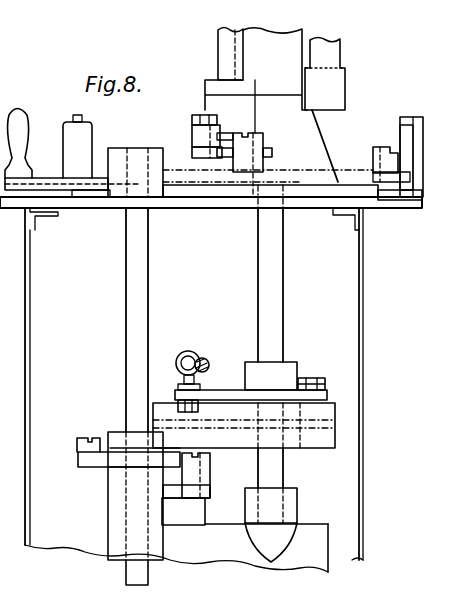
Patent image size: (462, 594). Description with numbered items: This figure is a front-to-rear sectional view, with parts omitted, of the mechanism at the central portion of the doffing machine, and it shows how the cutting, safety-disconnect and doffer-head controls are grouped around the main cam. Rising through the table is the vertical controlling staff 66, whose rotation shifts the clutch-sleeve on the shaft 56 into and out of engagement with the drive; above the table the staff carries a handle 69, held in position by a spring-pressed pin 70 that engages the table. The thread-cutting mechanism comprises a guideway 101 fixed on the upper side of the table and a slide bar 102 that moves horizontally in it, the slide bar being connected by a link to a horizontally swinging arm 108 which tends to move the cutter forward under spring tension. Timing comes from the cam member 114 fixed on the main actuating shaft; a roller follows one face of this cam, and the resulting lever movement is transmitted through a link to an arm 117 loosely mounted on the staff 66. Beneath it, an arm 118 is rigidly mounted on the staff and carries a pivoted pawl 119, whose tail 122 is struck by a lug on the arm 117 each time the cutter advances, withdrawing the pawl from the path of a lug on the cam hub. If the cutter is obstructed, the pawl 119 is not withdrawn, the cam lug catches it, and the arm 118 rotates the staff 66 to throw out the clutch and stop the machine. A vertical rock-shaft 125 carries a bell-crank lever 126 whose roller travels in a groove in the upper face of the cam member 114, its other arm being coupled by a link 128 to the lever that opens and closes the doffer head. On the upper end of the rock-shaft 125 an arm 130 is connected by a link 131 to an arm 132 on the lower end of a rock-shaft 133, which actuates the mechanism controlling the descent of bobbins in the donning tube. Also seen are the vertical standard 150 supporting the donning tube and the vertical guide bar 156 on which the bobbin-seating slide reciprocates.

The shaft 56 is at (211, 305).
The handle 69 is at (14, 110).
The spring-pressed pin 70 is at (76, 116).
The controlling staff 66 is at (133, 312).
The rock-shaft 133 is at (226, 50).
The vertical standard 150 is at (271, 105).
The vertical guide bar 156 is at (322, 60).
The guideway 101 is at (422, 130).
The slide bar 102 is at (404, 132).
The horizontally swinging arm 108 is at (357, 172).
The arm 132 is at (190, 133).
The arm 130 is at (253, 172).
The link 131 is at (227, 148).
The vertical rock-shaft 125 is at (272, 277).
The bell-crank lever 126 is at (328, 358).
The link 128 is at (228, 358).
The cam member 114 is at (297, 440).
The arm 117 is at (102, 456).
The pawl 119 is at (186, 474).
The tail 122 is at (175, 477).
The arm 118 is at (182, 500).